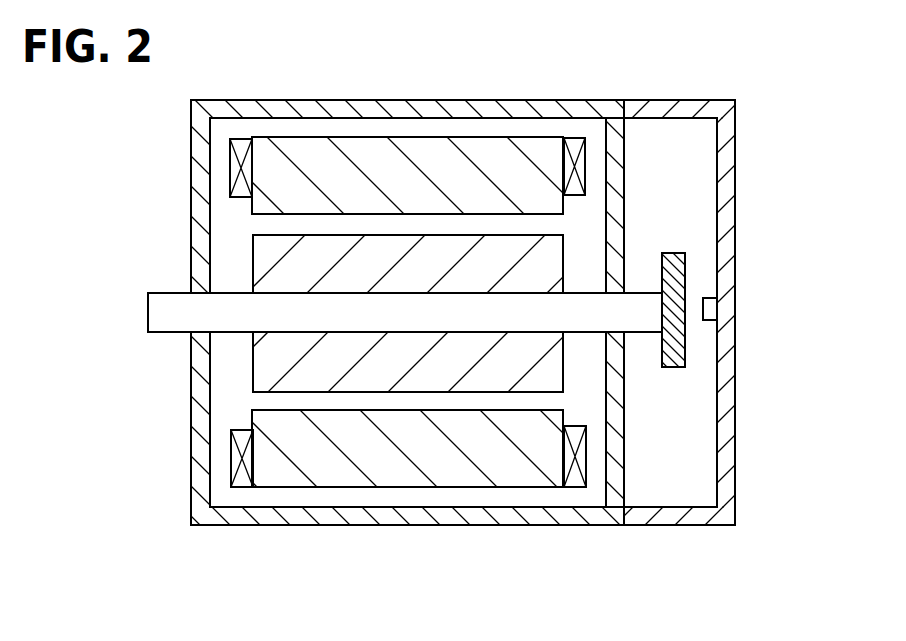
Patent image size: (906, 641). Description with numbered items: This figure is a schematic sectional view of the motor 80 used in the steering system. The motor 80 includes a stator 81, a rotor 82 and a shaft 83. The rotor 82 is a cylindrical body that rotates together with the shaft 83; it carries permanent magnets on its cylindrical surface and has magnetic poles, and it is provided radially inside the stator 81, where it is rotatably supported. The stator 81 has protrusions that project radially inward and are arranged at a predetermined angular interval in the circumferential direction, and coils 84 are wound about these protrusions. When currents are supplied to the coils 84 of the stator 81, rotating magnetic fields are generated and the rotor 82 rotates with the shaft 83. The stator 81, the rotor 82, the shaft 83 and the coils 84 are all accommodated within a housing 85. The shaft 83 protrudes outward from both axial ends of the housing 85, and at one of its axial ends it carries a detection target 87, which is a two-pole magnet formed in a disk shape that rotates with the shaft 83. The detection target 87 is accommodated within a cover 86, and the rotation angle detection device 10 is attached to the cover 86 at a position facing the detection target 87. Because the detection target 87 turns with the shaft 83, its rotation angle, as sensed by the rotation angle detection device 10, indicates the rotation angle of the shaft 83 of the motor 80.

The motor 80 is at (243, 528).
The stator 81 is at (332, 146).
The rotor 82 is at (277, 376).
The shaft 83 is at (163, 313).
The coils 84 is at (241, 150).
The housing 85 is at (576, 521).
The cover 86 is at (697, 521).
The detection target 87 is at (678, 262).
The rotation angle detection device 10 is at (708, 319).